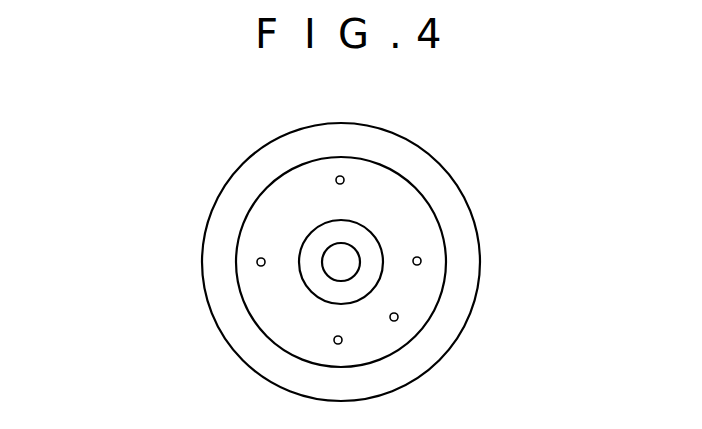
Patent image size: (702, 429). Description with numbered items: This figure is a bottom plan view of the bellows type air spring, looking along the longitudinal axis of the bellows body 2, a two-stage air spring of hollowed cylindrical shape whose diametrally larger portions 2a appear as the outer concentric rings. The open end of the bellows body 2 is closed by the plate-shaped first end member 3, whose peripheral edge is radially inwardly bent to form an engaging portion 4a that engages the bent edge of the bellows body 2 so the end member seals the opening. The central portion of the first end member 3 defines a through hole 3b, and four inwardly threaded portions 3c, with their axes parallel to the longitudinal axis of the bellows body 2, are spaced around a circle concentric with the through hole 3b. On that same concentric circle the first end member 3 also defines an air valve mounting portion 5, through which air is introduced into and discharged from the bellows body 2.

The bellows body 2 is at (499, 217).
The diametrally larger portions 2a is at (218, 283).
The first end member 3 is at (270, 217).
The through hole 3b is at (320, 229).
The inwardly threaded portions 3c is at (345, 177).
The engaging portion 4a is at (349, 263).
The air valve mounting portion 5 is at (398, 317).